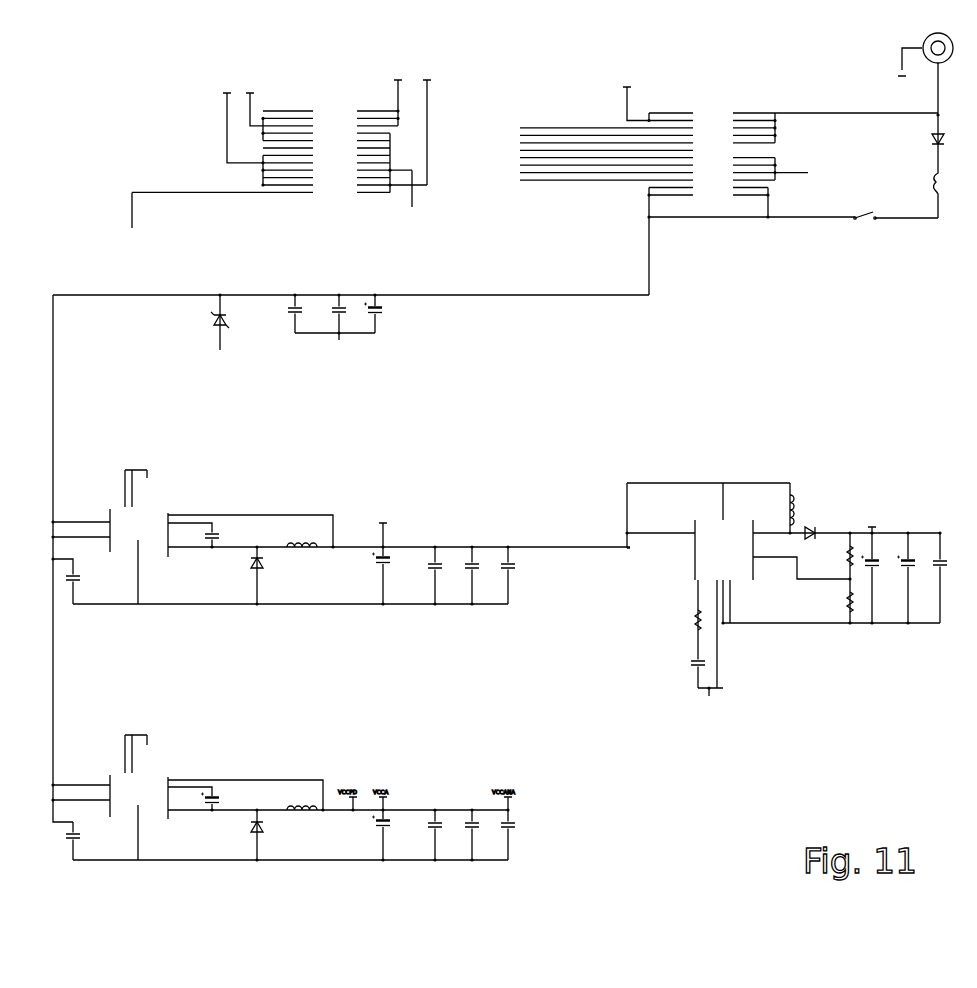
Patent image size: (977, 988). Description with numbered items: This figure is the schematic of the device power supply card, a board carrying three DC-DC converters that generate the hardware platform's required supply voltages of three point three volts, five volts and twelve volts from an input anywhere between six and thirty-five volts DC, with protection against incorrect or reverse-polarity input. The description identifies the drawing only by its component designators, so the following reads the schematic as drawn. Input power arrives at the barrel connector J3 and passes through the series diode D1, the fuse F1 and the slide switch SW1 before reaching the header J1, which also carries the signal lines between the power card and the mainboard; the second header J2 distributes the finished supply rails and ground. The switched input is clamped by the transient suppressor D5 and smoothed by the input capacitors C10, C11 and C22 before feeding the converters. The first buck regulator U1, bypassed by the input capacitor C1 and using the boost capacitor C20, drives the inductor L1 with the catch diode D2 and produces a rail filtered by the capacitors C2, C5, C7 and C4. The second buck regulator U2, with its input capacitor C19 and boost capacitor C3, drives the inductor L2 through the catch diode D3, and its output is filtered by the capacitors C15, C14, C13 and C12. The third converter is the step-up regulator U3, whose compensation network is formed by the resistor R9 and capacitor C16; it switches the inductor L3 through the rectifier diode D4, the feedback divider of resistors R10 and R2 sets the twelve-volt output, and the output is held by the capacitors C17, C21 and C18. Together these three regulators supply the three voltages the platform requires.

The header connector 12x2 J1 is at (729, 186).
The header connector 12x2 J2 is at (282, 153).
The barrel connector J3 is at (924, 65).
The diode 1N4004 D1 is at (948, 140).
The fuse F1 is at (950, 192).
The slide switch SW1 is at (894, 218).
The TVS diode D5 is at (223, 325).
The capacitor C10 is at (300, 313).
The capacitor C11 is at (343, 320).
The capacitor C22 is at (379, 313).
The regulator LM2675-5.0 U1 is at (217, 537).
The capacitor C1 is at (71, 581).
The capacitor C20 is at (217, 537).
The Schottky diode D2 is at (262, 579).
The inductor L1 is at (302, 547).
The capacitor C2 is at (388, 560).
The capacitor C5 is at (438, 575).
The capacitor C7 is at (478, 575).
The capacitor C4 is at (515, 574).
The regulator MIC4172 U3 is at (737, 593).
The resistor R9 is at (703, 627).
The capacitor C16 is at (694, 669).
The inductor L3 is at (798, 509).
The Schottky diode D4 is at (865, 532).
The resistor R10 is at (857, 555).
The resistor R2 is at (857, 602).
The capacitor C17 is at (877, 571).
The capacitor C21 is at (913, 577).
The capacitor C18 is at (945, 577).
The regulator LM2675-3.3 U2 is at (217, 797).
The capacitor C19 is at (78, 841).
The capacitor C3 is at (209, 799).
The Schottky diode D3 is at (262, 839).
The inductor L2 is at (302, 810).
The capacitor C15 is at (388, 829).
The capacitor C14 is at (440, 834).
The capacitor C13 is at (478, 834).
The capacitor C12 is at (515, 828).